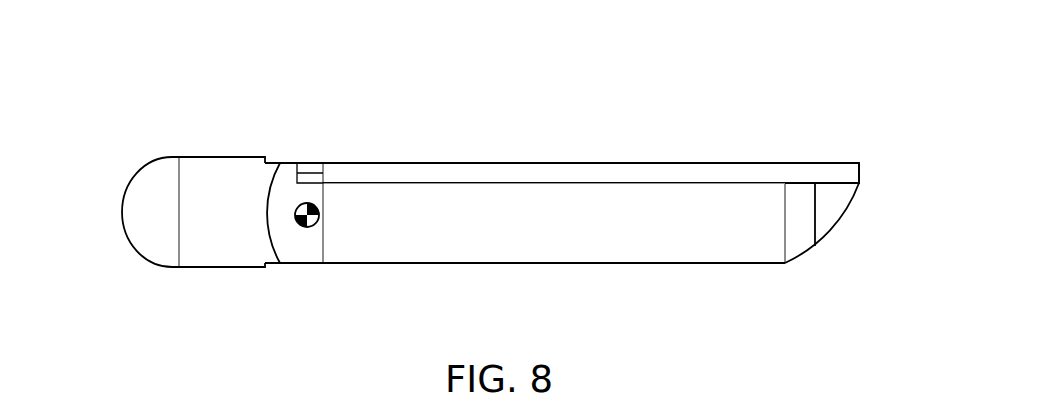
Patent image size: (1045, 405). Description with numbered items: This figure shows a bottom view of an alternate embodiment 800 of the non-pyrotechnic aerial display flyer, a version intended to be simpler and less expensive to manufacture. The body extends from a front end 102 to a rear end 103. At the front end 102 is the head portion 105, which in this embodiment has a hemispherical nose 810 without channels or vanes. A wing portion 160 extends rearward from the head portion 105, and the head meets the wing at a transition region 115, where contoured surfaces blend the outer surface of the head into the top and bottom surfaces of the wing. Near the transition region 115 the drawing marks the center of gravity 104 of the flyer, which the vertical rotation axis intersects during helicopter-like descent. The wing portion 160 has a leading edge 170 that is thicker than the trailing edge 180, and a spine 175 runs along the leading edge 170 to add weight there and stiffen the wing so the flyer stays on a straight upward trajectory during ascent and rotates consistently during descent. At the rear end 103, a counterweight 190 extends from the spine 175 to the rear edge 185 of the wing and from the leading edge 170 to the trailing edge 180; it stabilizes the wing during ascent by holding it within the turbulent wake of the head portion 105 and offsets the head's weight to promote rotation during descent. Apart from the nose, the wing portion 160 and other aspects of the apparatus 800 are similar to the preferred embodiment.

The alternate embodiment of the flyer 800 is at (195, 73).
The front end 102 is at (92, 223).
The head portion 105 is at (141, 151).
The hemispherical nose 810 is at (130, 248).
The center of gravity 104 is at (312, 200).
The transition region 115 is at (303, 243).
The leading edge 170 is at (617, 162).
The spine 175 is at (475, 172).
The trailing edge 180 is at (642, 263).
The wing portion 160 is at (796, 121).
The counterweight 190 is at (828, 202).
The rear end 103 is at (885, 221).
The rear edge 185 is at (833, 229).